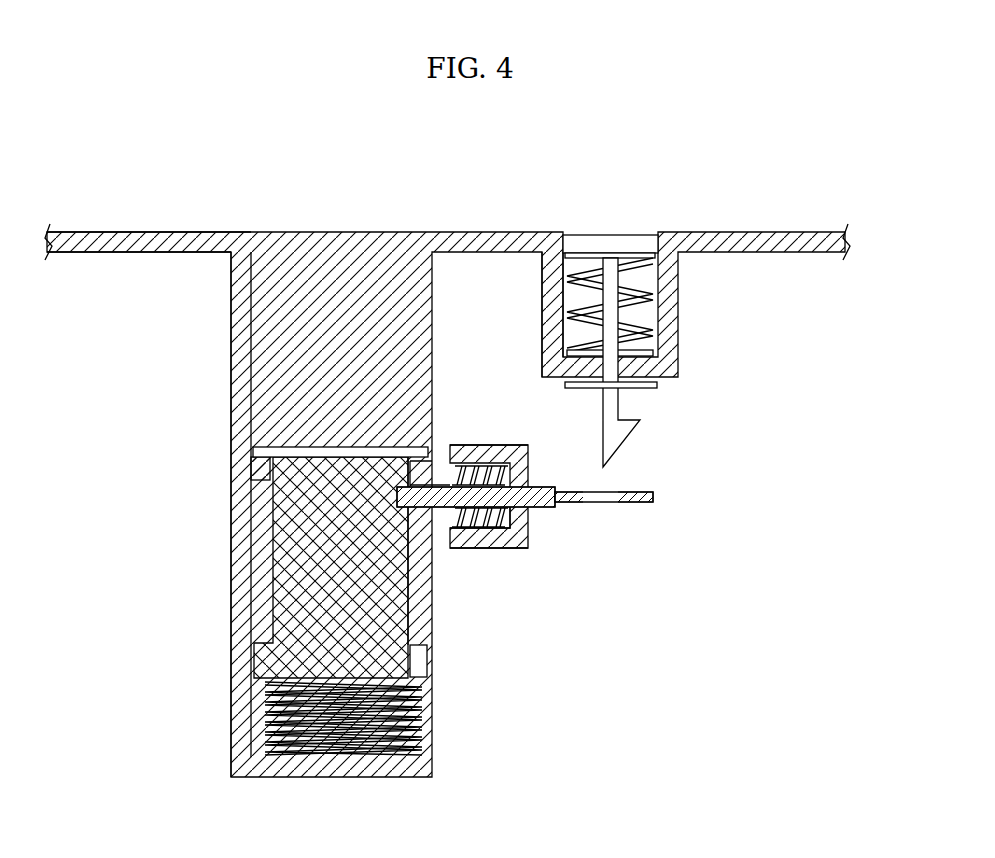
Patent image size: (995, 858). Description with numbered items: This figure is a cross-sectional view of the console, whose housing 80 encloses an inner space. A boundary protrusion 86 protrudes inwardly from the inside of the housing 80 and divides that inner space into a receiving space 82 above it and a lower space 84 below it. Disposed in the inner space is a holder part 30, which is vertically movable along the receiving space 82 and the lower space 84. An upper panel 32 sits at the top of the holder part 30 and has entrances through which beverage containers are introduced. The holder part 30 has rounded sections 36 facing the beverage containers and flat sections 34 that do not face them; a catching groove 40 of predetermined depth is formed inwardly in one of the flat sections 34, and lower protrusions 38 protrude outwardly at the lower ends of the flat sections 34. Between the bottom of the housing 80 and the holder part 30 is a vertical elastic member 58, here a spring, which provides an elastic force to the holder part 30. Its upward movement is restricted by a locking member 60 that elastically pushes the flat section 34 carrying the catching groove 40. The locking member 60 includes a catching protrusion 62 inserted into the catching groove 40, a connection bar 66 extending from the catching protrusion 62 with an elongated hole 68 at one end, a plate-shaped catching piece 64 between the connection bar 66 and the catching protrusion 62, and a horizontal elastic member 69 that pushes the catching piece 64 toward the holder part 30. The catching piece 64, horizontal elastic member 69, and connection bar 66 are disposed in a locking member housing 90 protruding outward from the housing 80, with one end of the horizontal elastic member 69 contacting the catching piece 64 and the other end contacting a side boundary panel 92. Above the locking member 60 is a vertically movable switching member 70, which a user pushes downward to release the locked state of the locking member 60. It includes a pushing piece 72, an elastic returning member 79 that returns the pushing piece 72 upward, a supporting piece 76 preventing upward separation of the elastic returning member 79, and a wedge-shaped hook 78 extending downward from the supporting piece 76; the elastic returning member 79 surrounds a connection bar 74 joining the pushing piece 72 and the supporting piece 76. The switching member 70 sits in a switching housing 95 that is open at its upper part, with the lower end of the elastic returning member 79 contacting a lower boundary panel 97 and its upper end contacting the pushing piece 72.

The holder part 30 is at (323, 524).
The upper panel 32 is at (262, 447).
The flat sections 34 is at (412, 586).
The rounded sections 36 is at (318, 545).
The lower protrusions 38 is at (418, 657).
The catching groove 40 is at (397, 460).
The vertical elastic member 58 is at (263, 718).
The locking member 60 is at (560, 520).
The catching protrusion 62 is at (422, 510).
The catching piece 64 is at (450, 528).
The connection bar 66 is at (523, 462).
The elongated hole 68 is at (598, 500).
The horizontal elastic member 69 is at (458, 549).
The switching member 70 is at (677, 292).
The pushing piece 72 is at (640, 247).
The connection bar 74 is at (612, 310).
The supporting piece 76 is at (640, 390).
The wedge-shaped hook 78 is at (622, 432).
The elastic returning member 79 is at (587, 263).
The housing 80 is at (447, 448).
The receiving space 82 is at (340, 272).
The lower space 84 is at (258, 588).
The boundary protrusion 86 is at (262, 470).
The locking member housing 90 is at (552, 531).
The side boundary panel 92 is at (541, 460).
The switching housing 95 is at (694, 341).
The lower boundary panel 97 is at (657, 384).